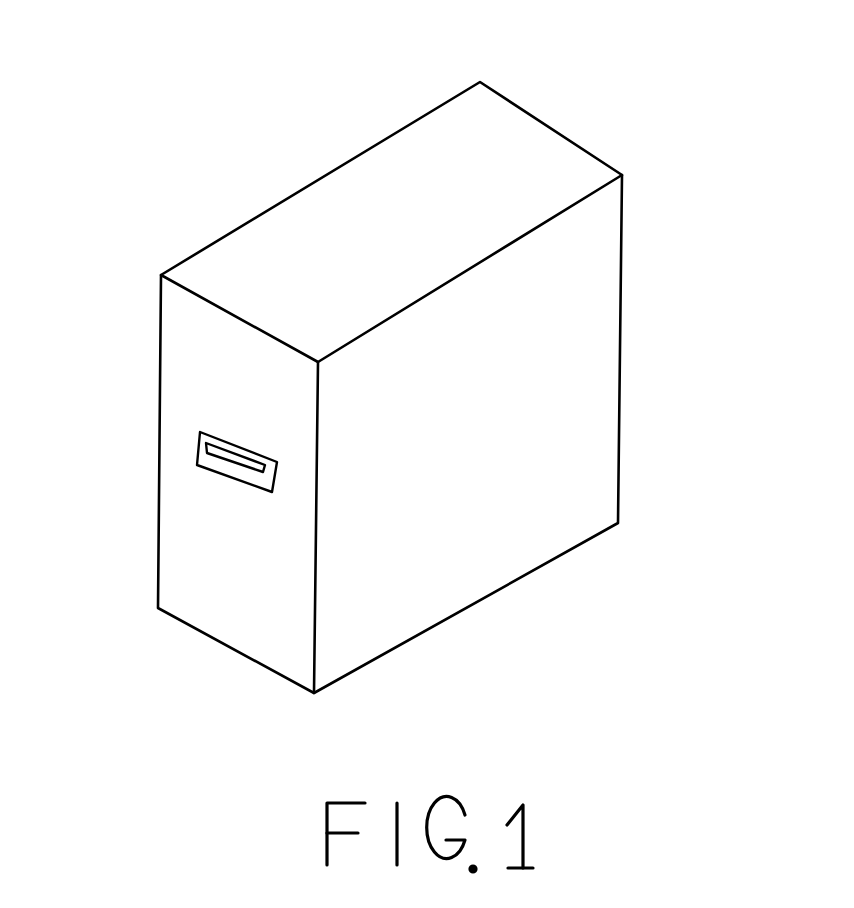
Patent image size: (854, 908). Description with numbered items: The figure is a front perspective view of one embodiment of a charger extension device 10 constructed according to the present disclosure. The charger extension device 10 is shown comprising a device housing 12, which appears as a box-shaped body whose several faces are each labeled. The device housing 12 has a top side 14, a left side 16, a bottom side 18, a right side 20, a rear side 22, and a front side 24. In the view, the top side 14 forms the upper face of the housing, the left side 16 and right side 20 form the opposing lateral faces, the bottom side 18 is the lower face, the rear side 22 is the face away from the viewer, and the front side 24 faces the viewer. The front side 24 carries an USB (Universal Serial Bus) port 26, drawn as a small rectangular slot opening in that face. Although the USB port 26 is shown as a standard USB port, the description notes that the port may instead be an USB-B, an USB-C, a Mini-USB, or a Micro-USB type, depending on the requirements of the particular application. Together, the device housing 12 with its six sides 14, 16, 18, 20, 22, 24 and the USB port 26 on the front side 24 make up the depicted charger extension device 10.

The charger extension device 10 is at (248, 125).
The device housing 12 is at (572, 593).
The top side 14 is at (404, 172).
The left side 16 is at (190, 245).
The bottom side 18 is at (413, 650).
The right side 20 is at (585, 365).
The rear side 22 is at (637, 240).
The front side 24 is at (188, 558).
The USB port 26 is at (233, 488).